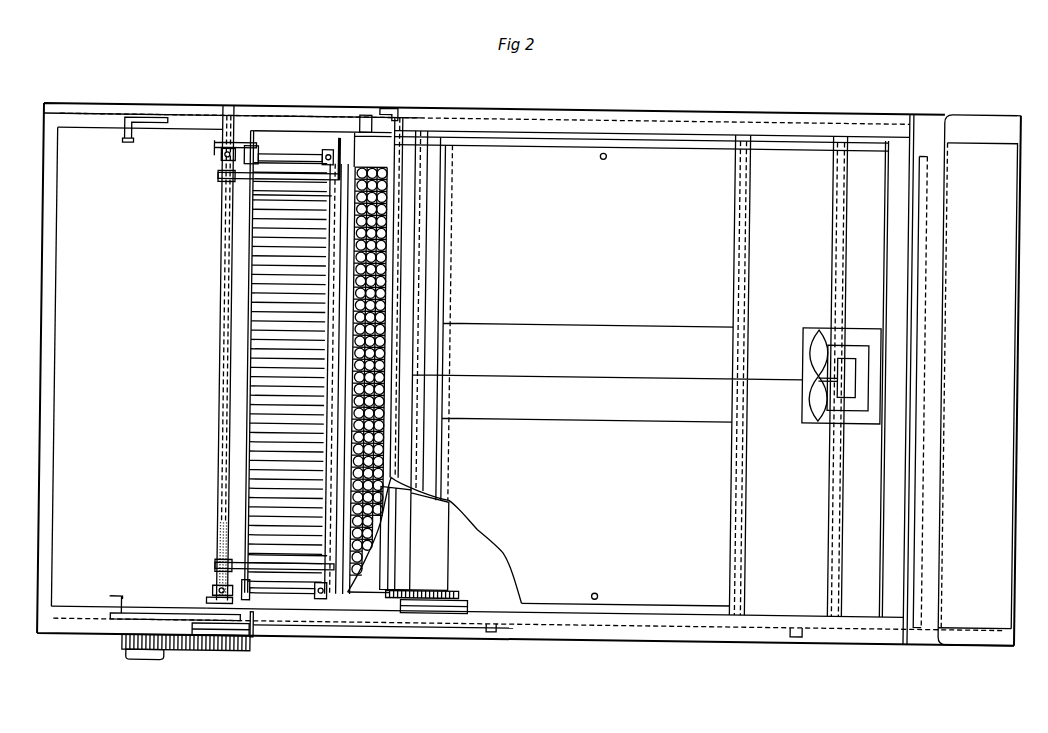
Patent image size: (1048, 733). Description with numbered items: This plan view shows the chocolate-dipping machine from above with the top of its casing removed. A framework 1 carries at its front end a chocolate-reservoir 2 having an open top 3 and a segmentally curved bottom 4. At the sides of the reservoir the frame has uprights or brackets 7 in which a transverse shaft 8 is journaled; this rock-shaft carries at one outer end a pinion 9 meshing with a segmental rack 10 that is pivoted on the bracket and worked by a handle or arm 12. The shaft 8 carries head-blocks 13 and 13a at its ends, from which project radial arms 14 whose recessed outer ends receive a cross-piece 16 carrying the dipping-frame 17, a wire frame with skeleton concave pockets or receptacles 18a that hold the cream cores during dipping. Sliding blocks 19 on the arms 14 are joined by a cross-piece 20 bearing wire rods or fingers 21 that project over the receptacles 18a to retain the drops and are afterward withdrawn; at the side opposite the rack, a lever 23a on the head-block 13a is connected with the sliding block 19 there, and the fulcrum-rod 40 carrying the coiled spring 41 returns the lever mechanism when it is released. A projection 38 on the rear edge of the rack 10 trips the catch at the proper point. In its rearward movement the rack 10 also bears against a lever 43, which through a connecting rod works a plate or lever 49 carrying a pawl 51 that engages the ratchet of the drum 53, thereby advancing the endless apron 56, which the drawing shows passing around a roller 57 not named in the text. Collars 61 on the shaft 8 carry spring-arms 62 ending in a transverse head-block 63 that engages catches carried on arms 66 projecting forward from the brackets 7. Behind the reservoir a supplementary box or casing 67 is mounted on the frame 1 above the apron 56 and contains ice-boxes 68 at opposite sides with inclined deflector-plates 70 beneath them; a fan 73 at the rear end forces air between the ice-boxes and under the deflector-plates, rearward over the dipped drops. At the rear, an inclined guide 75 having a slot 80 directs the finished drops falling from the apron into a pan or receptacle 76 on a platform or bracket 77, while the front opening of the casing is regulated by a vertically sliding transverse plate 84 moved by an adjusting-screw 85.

The framework 1 is at (332, 111).
The chocolate-reservoir 2 is at (70, 601).
The open top 3 is at (130, 503).
The bottom 4 is at (139, 231).
The uprights or brackets 7 is at (209, 634).
The transverse shaft 8 is at (223, 332).
The pinion 9 is at (228, 633).
The segmental rack 10 is at (186, 650).
The handle or arm 12 is at (140, 657).
The head-block 13 is at (218, 588).
The head-block 13a is at (225, 152).
The radial arms 14 is at (272, 586).
The cross-piece 16 is at (323, 389).
The dipping-frame 17 is at (344, 170).
The concave pockets or receptacles 18a is at (388, 218).
The sliding blocks 19 is at (256, 148).
The cross-piece 20 is at (251, 245).
The wire rods or fingers 21 is at (278, 267).
The lever 23a is at (237, 141).
The projection 38 is at (259, 640).
The transverse shaft 40 is at (226, 558).
The coiled spring 41 is at (220, 561).
The lever 43 is at (310, 623).
The plate or lever 49 is at (463, 597).
The pawl 51 is at (449, 586).
The drum 53 is at (436, 540).
The apron 56 is at (401, 149).
The support 57 is at (366, 120).
The collars 61 is at (224, 178).
The spring-arms 62 is at (285, 176).
The transverse head-block 63 is at (333, 325).
The arms 66 is at (158, 122).
The supplementary box or casing 67 is at (644, 120).
The ice-boxes 68 is at (661, 376).
The deflector-plates 70 is at (770, 234).
The fan 73 is at (815, 342).
The inclined guide 75 is at (930, 520).
The pan or receptacle 76 is at (979, 380).
The platform or bracket 77 is at (975, 630).
The slot 80 is at (918, 452).
The transverse plate 84 is at (394, 187).
The adjusting-screw 85 is at (397, 108).